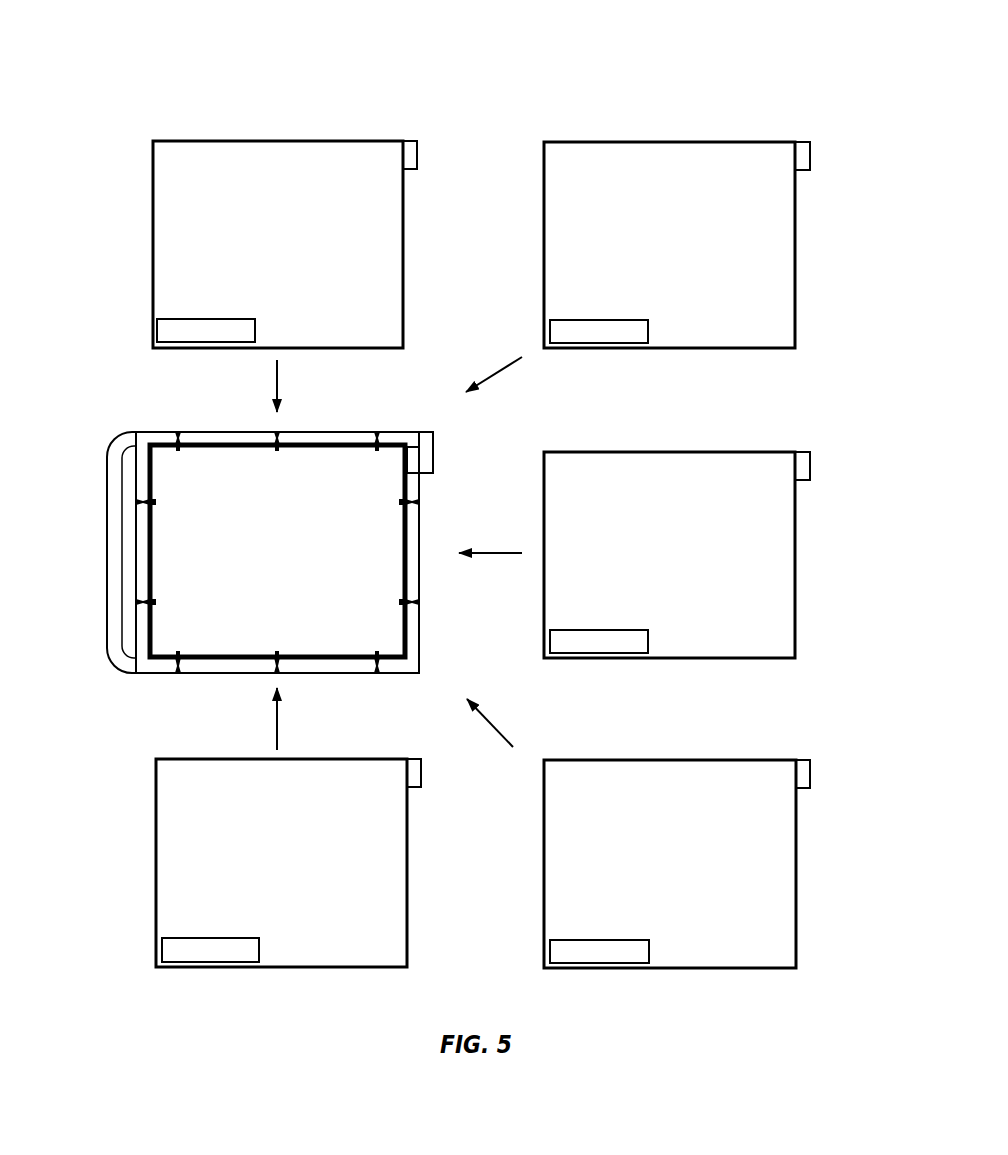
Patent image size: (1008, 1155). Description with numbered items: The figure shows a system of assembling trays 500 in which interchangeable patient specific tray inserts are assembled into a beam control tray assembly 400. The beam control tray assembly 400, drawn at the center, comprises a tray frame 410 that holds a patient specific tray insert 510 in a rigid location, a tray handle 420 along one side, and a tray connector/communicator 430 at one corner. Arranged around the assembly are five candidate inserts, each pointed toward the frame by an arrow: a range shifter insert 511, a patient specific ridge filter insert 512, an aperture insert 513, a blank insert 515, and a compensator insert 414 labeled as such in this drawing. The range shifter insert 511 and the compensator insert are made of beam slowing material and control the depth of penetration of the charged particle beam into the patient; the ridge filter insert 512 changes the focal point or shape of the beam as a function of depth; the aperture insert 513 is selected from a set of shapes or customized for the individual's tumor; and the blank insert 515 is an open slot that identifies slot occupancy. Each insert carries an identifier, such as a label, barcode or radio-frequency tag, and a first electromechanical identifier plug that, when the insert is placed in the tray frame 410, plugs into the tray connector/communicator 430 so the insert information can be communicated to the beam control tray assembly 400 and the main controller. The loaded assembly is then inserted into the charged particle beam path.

The system of assembling trays 500 is at (750, 78).
The beam control tray assembly 400 is at (145, 386).
The tray frame 410 is at (247, 431).
The patient specific tray insert 510 is at (248, 448).
The tray handle 420 is at (107, 547).
The tray connector/communicator 430 is at (433, 443).
The range shifter insert 511 is at (376, 141).
The patient specific ridge filter insert 512 is at (768, 142).
The aperture insert 513 is at (768, 452).
The blank insert 515 is at (373, 759).
The compensator 414 is at (768, 760).